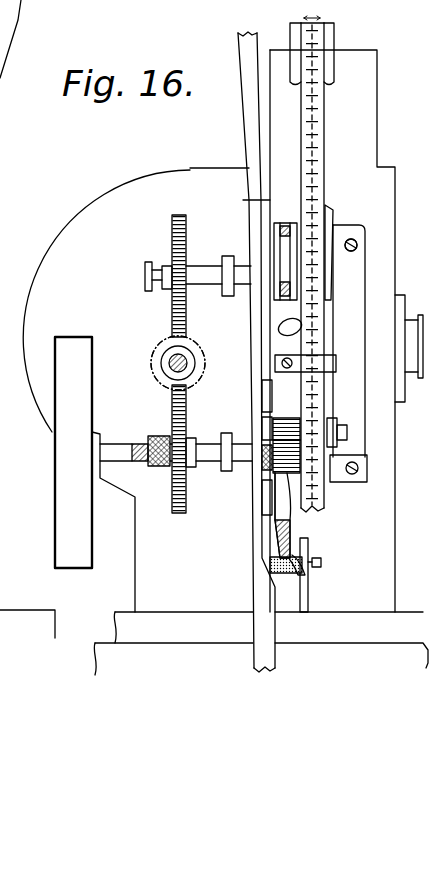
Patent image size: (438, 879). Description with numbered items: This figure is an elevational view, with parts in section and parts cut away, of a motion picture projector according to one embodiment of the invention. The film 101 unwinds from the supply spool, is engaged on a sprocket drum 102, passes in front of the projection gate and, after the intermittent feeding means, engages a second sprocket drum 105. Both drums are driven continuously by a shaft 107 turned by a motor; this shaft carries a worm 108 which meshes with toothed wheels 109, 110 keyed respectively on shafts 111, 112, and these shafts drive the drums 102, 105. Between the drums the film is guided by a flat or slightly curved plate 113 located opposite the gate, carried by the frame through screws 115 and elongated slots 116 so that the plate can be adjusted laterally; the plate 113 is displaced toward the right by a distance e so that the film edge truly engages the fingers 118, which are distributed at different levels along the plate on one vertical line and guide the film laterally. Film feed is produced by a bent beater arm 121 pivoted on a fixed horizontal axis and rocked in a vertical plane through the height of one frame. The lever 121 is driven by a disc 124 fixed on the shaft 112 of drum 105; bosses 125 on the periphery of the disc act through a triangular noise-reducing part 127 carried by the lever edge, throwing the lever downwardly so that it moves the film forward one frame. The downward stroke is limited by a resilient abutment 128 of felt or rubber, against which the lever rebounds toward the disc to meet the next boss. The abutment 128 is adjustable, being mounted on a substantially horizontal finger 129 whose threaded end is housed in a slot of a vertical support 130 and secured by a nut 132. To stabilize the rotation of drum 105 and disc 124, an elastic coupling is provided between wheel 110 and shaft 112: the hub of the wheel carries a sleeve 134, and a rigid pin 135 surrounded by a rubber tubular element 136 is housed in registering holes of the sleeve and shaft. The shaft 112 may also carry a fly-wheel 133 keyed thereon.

The film 101 is at (320, 154).
The sprocket drum 102 is at (332, 262).
The sprocket drum 105 is at (367, 453).
The shaft 107 is at (190, 345).
The worm 108 is at (195, 381).
The toothed wheel 109 is at (172, 315).
The toothed wheel 110 is at (172, 402).
The shaft 111 is at (199, 272).
The shaft 112 is at (212, 455).
The plate 113 is at (350, 408).
The screws 115 is at (354, 239).
The elongated slots 116 is at (359, 244).
The fingers 118 is at (279, 333).
The beater arm 121 is at (289, 535).
The disc 124 is at (268, 477).
The bosses 125 is at (268, 492).
The triangular part 127 is at (275, 533).
The abutment 128 is at (270, 568).
The finger 129 is at (298, 568).
The vertical support 130 is at (308, 549).
The nut 132 is at (320, 565).
The fly-wheel 133 is at (66, 478).
The sleeve 134 is at (150, 447).
The rigid pin 135 is at (160, 467).
The tubular element 136 is at (128, 462).